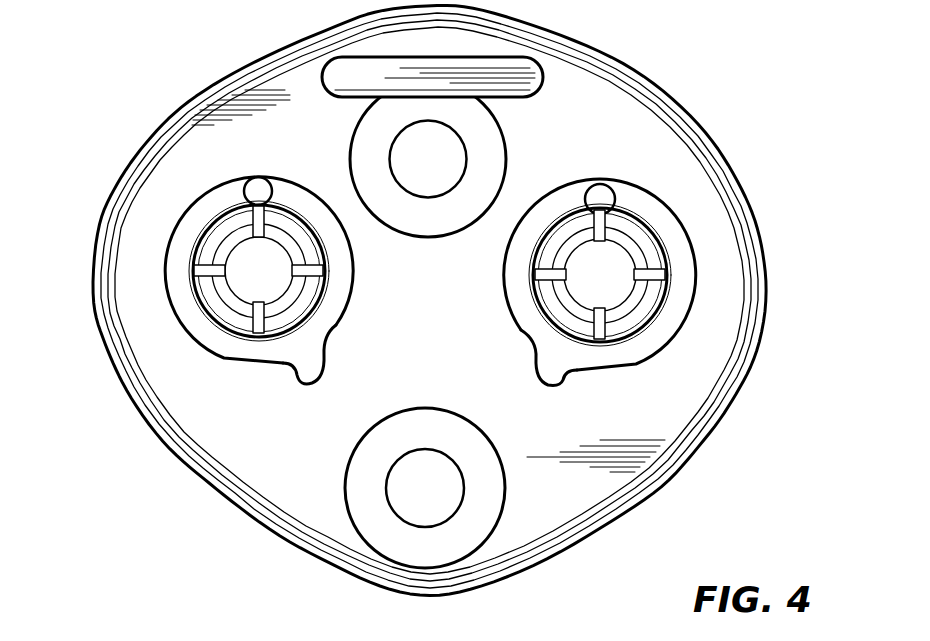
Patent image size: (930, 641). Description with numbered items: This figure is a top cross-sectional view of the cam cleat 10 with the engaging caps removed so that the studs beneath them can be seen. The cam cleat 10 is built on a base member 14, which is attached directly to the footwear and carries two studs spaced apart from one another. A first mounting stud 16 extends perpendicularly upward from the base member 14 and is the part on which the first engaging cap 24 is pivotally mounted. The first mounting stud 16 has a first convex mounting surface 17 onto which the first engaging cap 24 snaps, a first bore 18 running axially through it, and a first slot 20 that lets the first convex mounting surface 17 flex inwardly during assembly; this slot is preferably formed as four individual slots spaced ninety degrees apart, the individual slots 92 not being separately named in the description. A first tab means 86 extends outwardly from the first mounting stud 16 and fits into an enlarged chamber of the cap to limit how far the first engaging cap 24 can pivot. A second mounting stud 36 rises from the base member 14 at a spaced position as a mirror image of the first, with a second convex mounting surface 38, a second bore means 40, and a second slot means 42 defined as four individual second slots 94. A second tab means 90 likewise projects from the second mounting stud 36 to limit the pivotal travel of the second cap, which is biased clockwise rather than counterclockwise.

The cam cleat 10 is at (180, 45).
The base member 14 is at (443, 392).
The first mounting stud 16 is at (225, 346).
The first convex mounting surface 17 is at (207, 247).
The first bore 18 is at (245, 284).
The first slot 20 is at (195, 270).
The first engaging cap 24 is at (210, 160).
The second mounting stud 36 is at (665, 312).
The second convex mounting surface 38 is at (650, 255).
The second bore means 40 is at (586, 288).
The second slot means 42 is at (662, 277).
The first tab means 86 is at (300, 380).
The second tab means 90 is at (565, 380).
The contacts 92 is at (300, 267).
The second slots 94 is at (593, 230).